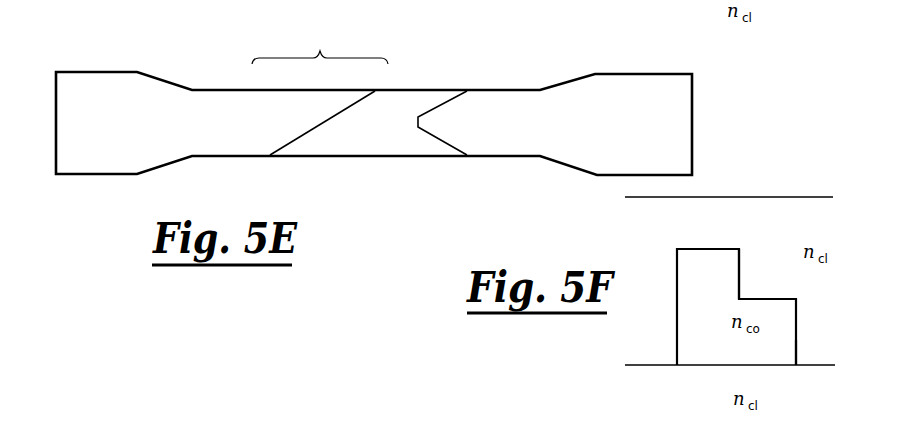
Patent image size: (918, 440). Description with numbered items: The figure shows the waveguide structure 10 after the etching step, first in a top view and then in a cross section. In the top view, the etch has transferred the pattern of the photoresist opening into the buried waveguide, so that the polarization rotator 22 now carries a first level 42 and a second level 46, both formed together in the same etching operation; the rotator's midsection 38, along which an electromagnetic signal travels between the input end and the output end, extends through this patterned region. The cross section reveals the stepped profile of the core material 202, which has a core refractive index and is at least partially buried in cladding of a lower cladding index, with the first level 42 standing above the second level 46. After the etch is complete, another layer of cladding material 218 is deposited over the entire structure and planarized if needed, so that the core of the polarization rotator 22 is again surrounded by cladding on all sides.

In FIG. 5E, the waveguide structure 10 is at (527, 57).
In FIG. 5E, the polarization rotator 22 is at (320, 45).
In FIG. 5E, the midsection 38 is at (337, 144).
In FIG. 5F, the midsection 38 is at (803, 314).
In FIG. 5E, the first level 42 is at (308, 100).
In FIG. 5F, the first level 42 is at (741, 270).
In FIG. 5E, the second level 46 is at (399, 106).
In FIG. 5F, the second level 46 is at (797, 350).
In FIG. 5F, the cladding material 218 is at (727, 215).
In FIG. 5F, the core material 202 is at (785, 0).